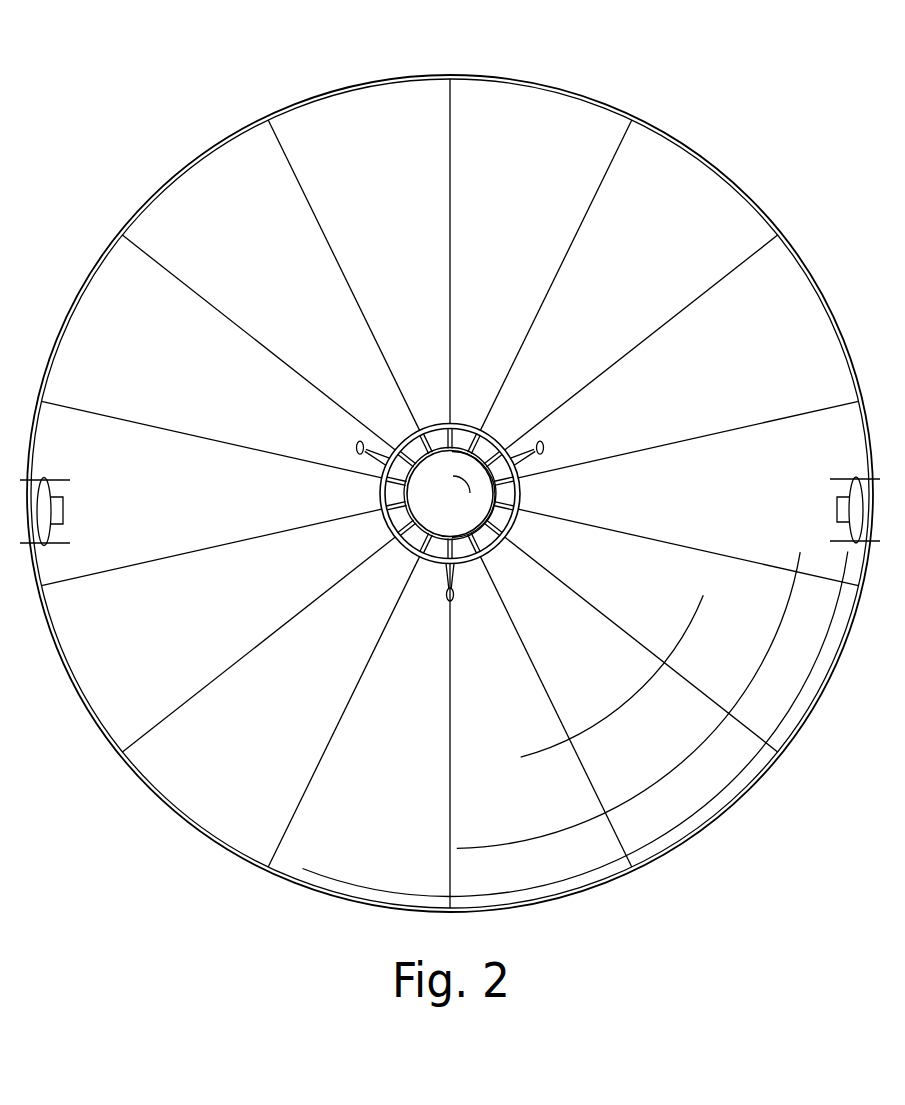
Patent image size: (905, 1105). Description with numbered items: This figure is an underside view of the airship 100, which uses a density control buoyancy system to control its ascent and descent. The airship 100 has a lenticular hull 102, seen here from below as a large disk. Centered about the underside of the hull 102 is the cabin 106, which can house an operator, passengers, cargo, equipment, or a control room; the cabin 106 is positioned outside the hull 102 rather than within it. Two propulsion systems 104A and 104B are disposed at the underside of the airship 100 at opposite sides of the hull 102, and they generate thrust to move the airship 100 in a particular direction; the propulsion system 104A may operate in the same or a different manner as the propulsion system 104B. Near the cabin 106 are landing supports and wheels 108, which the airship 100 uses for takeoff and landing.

The airship 100 is at (113, 128).
The hull 102 is at (645, 153).
The propulsion system 104A is at (45, 483).
The propulsion system 104B is at (855, 510).
The cabin 106 is at (438, 465).
The landing supports and wheels 108 is at (528, 458).